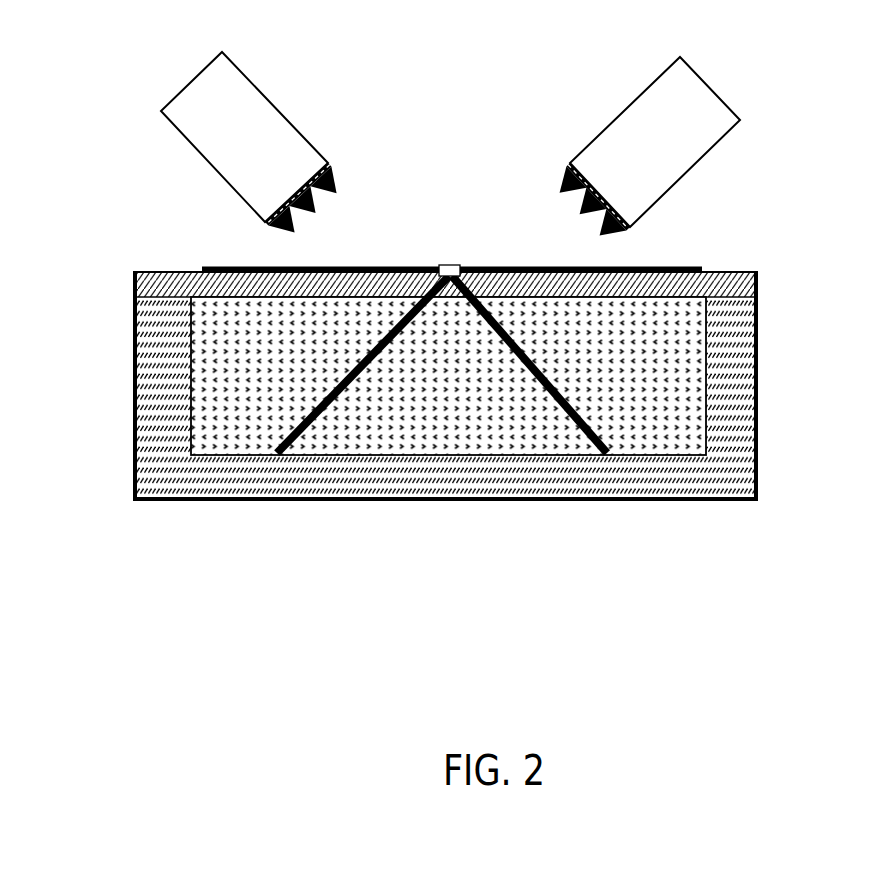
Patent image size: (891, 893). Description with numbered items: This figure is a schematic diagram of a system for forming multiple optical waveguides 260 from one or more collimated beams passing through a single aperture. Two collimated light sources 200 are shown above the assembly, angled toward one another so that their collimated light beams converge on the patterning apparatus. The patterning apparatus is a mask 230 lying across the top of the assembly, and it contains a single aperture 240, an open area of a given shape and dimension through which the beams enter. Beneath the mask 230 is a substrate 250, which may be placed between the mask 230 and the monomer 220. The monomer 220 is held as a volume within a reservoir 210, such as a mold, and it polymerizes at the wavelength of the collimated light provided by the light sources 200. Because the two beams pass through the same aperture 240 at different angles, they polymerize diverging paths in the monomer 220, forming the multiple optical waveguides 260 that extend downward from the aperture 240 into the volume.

The collimated light sources 200 is at (600, 133).
The reservoir 210 is at (760, 445).
The monomer 220 is at (708, 335).
The mask 230 is at (212, 268).
The aperture 240 is at (452, 266).
The substrate 250 is at (758, 283).
The optical waveguides 260 is at (348, 387).